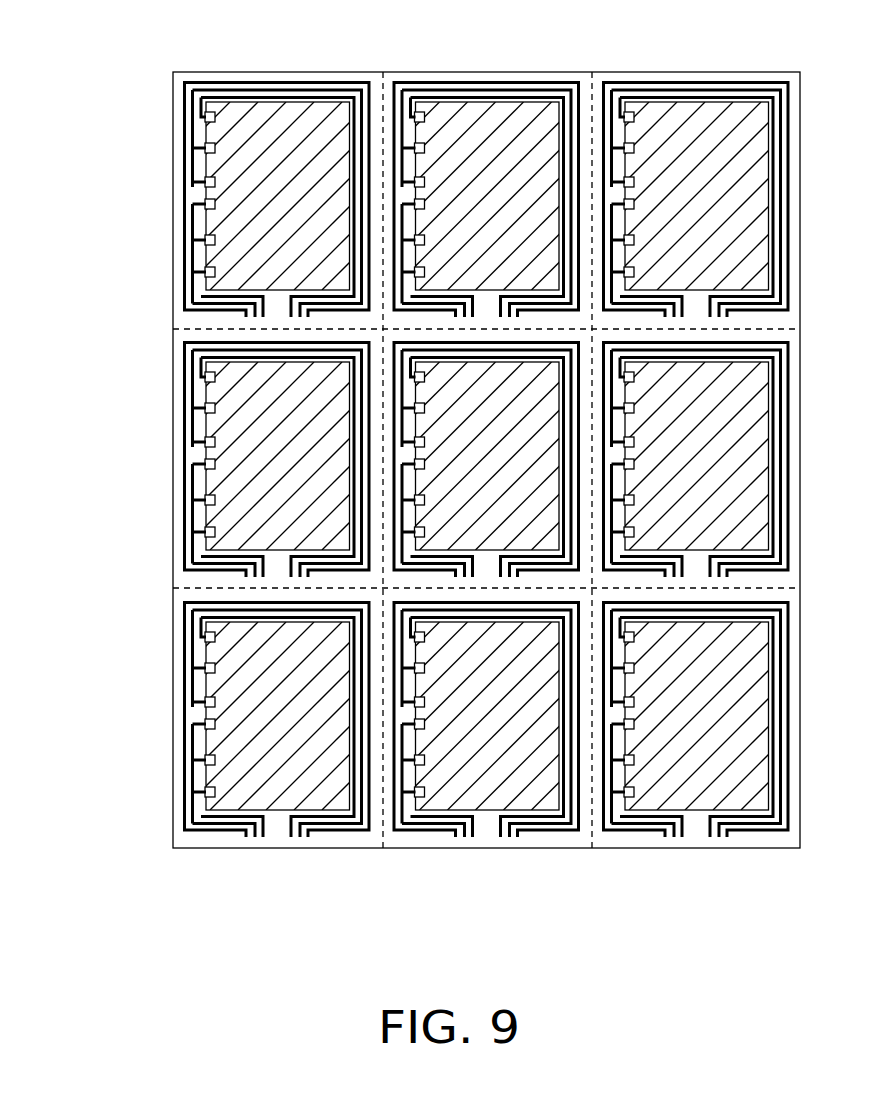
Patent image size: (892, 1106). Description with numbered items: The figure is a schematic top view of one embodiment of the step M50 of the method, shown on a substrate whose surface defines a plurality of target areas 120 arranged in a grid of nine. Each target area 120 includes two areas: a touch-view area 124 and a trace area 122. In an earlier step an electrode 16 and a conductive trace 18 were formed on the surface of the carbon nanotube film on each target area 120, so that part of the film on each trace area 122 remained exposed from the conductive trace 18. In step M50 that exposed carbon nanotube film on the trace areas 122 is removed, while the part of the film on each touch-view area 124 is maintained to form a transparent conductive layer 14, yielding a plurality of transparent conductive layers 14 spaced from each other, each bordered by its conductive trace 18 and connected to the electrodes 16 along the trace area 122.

The step of removing the exposed carbon nanotube film M50 is at (560, 38).
The transparent conductive layer 14 is at (102, 51).
The electrode 16 is at (204, 145).
The conductive trace 18 is at (277, 166).
The target area 120 is at (132, 197).
The trace area 122 is at (153, 254).
The touch-view area 124 is at (164, 149).